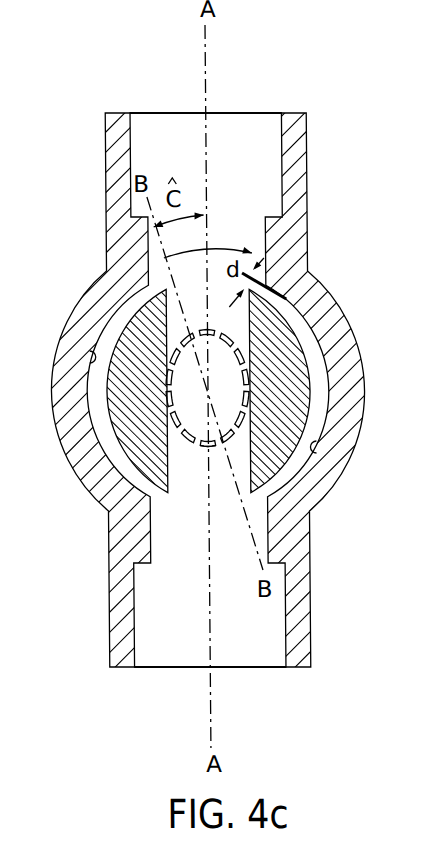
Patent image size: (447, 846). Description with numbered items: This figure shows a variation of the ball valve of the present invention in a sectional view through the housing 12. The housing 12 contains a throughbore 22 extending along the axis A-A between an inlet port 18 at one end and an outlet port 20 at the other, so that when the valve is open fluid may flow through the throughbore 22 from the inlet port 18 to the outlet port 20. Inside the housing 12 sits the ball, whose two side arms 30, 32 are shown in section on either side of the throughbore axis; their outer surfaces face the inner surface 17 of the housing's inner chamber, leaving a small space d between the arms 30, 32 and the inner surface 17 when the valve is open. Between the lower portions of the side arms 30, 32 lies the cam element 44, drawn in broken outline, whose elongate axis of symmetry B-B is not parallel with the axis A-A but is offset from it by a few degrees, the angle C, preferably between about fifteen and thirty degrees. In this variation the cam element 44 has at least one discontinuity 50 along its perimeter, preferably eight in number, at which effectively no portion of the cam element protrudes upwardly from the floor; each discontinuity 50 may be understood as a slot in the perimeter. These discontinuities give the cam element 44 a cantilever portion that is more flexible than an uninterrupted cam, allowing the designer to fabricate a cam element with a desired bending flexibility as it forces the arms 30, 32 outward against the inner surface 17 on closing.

The housing 12 is at (343, 311).
The inner surface 17 is at (90, 358).
The inlet port 18 is at (254, 116).
The outlet port 20 is at (278, 668).
The throughbore 22 is at (160, 127).
The side arm 30 is at (118, 403).
The side arm 32 is at (300, 401).
The cam element 44 is at (172, 437).
The discontinuity 50 is at (199, 447).